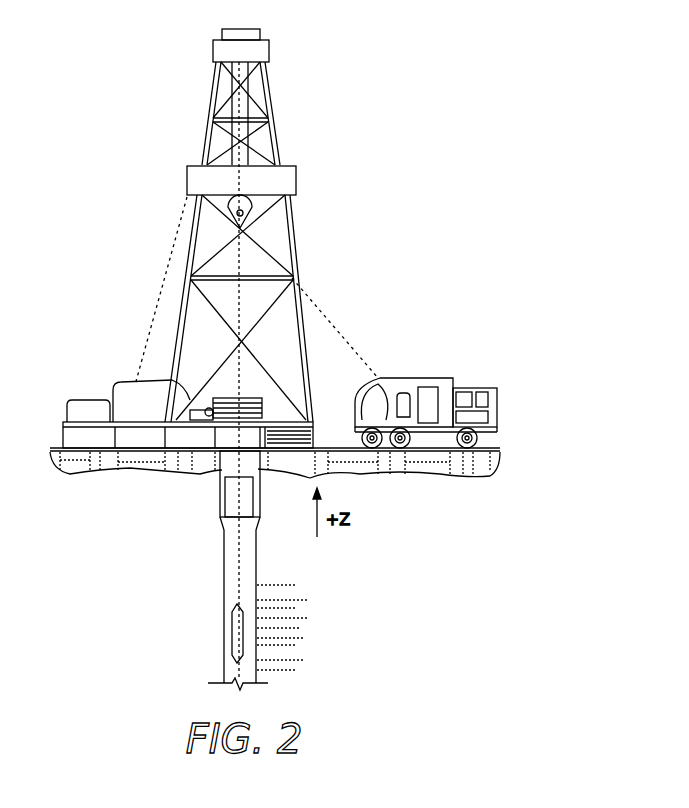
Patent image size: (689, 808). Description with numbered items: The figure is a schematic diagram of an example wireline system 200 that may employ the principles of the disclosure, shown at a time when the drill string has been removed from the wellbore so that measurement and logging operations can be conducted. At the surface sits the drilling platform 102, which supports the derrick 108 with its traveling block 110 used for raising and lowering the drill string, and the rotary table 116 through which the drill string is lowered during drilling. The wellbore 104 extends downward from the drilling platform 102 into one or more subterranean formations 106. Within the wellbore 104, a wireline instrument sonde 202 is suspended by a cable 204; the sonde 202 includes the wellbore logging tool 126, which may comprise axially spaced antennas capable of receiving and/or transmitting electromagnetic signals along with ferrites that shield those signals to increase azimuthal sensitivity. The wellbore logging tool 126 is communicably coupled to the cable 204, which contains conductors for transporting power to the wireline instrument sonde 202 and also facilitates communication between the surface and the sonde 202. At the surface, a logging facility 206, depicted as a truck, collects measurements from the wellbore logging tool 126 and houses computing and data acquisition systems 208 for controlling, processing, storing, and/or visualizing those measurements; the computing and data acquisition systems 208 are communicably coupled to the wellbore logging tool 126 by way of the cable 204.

The wireline system 200 is at (401, 166).
The drilling platform 102 is at (63, 438).
The wellbore 104 is at (260, 555).
The subterranean formations 106 is at (313, 583).
The derrick 108 is at (272, 106).
The traveling block 110 is at (262, 215).
The rotary table 116 is at (260, 387).
The wellbore logging tool 126 is at (228, 632).
The wireline instrument sonde 202 is at (224, 611).
The cable 204 is at (332, 311).
The logging facility 206 is at (447, 378).
The computing and data acquisition systems 208 is at (407, 380).